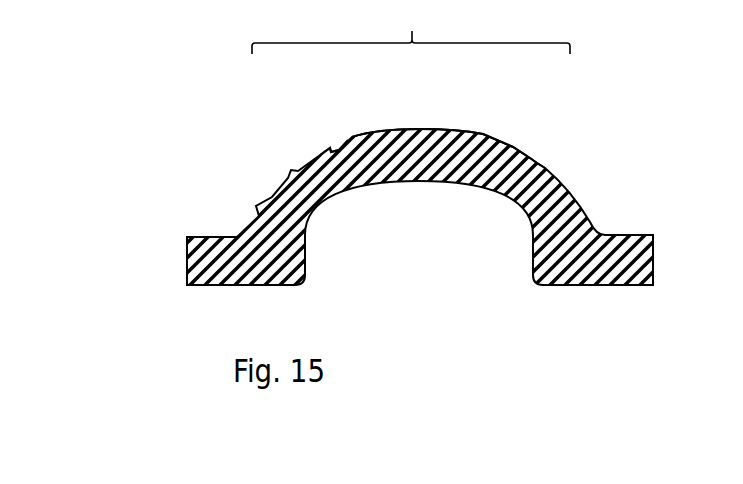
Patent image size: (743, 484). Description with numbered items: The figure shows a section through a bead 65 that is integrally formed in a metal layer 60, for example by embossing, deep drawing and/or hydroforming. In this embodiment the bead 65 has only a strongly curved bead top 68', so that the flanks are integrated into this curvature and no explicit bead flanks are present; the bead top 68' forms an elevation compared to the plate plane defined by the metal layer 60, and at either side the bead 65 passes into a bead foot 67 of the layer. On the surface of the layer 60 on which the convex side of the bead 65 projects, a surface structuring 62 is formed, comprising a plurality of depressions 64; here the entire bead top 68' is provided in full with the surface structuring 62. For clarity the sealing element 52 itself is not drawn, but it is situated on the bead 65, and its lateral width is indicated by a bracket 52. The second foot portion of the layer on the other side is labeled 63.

The sealing element 52 is at (411, 27).
The metal layer 60 is at (207, 247).
The surface structuring 62 is at (500, 142).
The second foot portion 63 is at (610, 238).
The depressions 64 is at (332, 150).
The bead 65 is at (270, 123).
The bead foot 67 is at (235, 237).
The bead top 68' is at (413, 101).